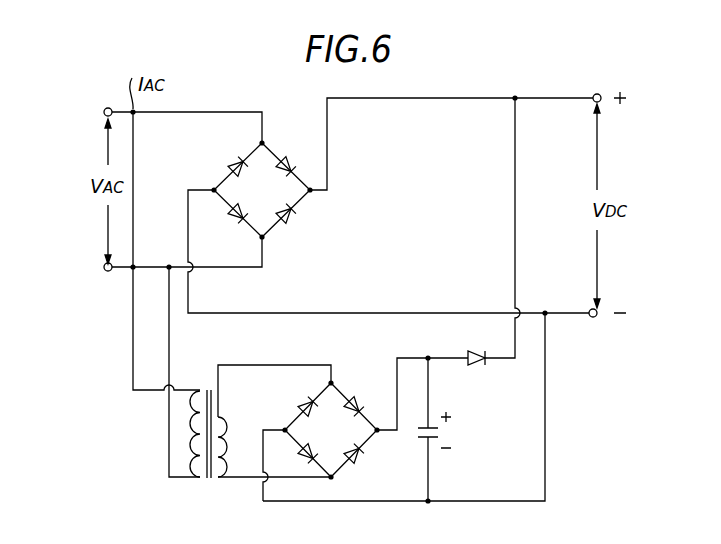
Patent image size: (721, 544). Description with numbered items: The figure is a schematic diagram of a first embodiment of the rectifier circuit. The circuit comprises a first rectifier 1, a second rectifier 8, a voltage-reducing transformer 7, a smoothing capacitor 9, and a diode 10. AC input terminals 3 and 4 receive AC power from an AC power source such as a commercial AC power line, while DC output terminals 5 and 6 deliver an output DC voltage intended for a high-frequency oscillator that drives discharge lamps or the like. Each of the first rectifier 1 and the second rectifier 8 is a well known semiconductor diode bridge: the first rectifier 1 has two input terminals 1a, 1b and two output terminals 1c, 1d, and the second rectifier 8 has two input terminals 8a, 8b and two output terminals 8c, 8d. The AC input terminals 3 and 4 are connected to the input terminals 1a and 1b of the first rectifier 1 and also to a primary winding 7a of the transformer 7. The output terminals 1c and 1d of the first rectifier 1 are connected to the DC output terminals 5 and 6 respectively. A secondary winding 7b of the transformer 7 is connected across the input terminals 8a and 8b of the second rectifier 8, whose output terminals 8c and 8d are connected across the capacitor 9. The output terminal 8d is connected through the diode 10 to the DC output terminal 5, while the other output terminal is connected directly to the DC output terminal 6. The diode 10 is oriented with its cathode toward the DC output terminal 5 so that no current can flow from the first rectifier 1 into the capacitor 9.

The first rectifier 1 is at (263, 201).
The input terminal of the first rectifier 1a is at (262, 143).
The input terminal of the first rectifier 1b is at (262, 240).
The output terminal of the first rectifier 1c is at (213, 189).
The output terminal of the first rectifier 1d is at (310, 190).
The AC input terminal 3 is at (108, 107).
The AC input terminal 4 is at (108, 272).
The DC output terminal 5 is at (597, 94).
The DC output terminal 6 is at (593, 318).
The voltage-reducing transformer 7 is at (203, 419).
The primary winding 7a is at (200, 450).
The secondary winding 7b is at (220, 450).
The second rectifier 8 is at (332, 441).
The input terminal of the second rectifier 8a is at (331, 383).
The input terminal of the second rectifier 8b is at (331, 478).
The output terminal of the second rectifier 8c is at (285, 429).
The output terminal of the second rectifier 8d is at (377, 431).
The smoothing capacitor 9 is at (440, 434).
The diode 10 is at (478, 367).